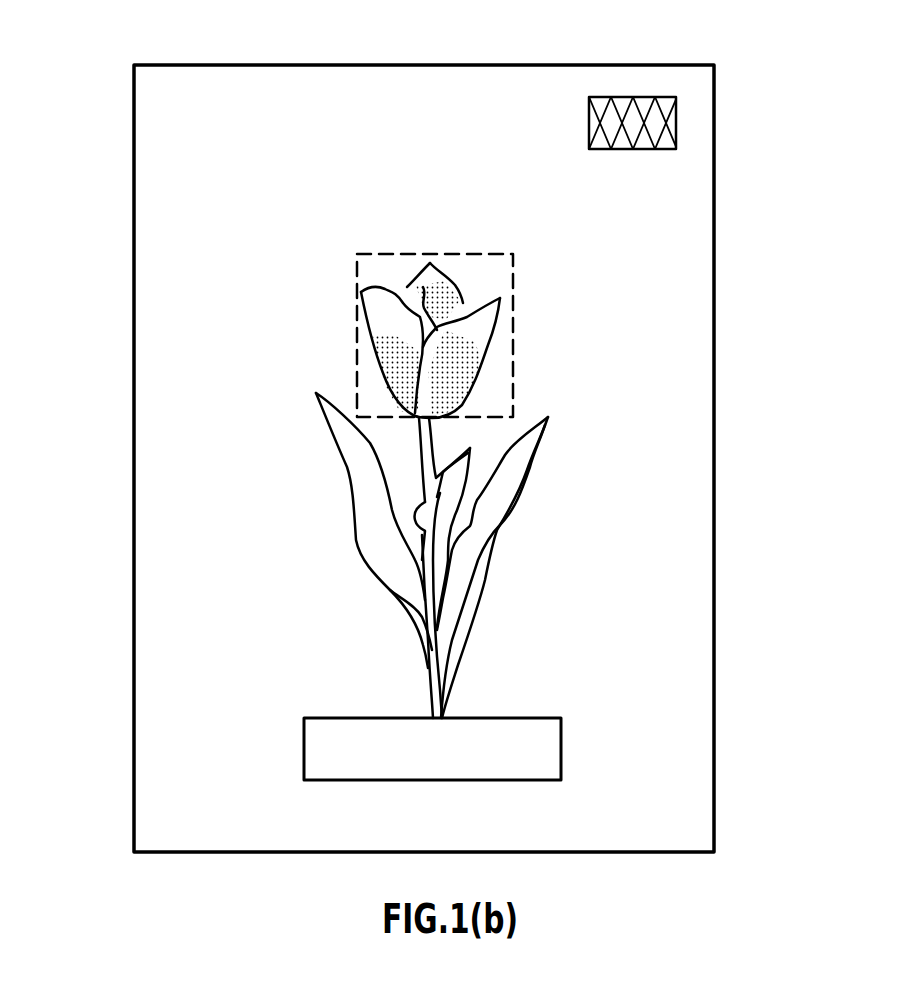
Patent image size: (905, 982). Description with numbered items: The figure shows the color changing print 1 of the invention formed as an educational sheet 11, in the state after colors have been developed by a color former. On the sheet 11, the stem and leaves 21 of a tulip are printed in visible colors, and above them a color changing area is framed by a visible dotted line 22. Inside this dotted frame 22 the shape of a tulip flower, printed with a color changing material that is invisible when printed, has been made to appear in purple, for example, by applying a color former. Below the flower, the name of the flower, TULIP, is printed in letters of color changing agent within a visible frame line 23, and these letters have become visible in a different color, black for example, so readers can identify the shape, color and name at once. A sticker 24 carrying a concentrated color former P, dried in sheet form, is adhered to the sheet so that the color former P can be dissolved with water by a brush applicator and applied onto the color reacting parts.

The color changing print 1 is at (93, 136).
The educational sheet 11 is at (145, 572).
The stem and leaves 21 is at (488, 602).
The visible dotted line 22 is at (522, 343).
The visible line 23 is at (573, 751).
The sticker 24 is at (650, 97).
The color former P is at (672, 130).